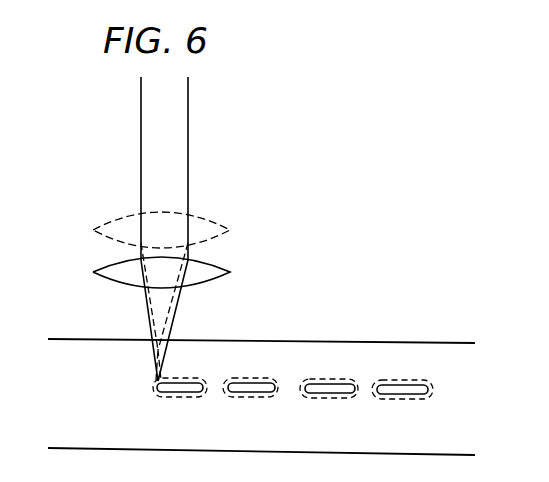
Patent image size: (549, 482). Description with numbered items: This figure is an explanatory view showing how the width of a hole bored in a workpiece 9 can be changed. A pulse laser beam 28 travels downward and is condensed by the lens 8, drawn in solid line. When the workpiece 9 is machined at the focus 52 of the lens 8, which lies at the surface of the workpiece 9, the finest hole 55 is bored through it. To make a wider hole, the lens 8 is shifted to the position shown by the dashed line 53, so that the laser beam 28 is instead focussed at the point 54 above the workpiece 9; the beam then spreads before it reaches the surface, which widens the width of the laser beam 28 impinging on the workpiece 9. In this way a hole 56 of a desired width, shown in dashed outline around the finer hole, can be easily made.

The pulse laser beam 28 is at (188, 122).
The dashed line 53 is at (205, 218).
The lens 8 is at (220, 267).
The focus 54 is at (160, 350).
The workpiece 9 is at (378, 342).
The focus 52 is at (155, 382).
The hole 56 is at (195, 376).
The finest hole 55 is at (183, 394).